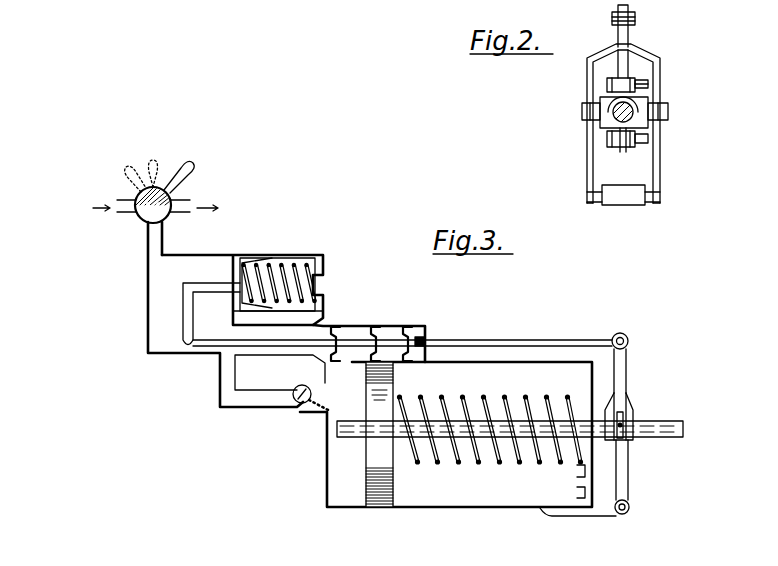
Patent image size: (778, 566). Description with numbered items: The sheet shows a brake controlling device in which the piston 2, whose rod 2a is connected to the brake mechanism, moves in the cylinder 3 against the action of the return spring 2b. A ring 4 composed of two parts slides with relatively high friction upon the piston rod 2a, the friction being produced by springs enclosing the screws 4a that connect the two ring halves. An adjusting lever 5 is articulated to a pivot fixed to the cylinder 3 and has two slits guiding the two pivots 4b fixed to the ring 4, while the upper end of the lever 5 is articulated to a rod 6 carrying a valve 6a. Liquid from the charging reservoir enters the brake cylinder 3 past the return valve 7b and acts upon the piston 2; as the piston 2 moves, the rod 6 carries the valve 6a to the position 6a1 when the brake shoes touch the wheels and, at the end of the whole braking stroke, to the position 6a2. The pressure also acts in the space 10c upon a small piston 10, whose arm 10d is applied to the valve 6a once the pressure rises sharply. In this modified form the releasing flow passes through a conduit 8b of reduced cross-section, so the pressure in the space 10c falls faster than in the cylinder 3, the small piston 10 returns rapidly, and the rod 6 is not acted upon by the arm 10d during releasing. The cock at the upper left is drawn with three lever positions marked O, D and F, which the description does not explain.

In FIG. 3, the piston 2 is at (385, 500).
In FIG. 2, the piston rod 2a is at (620, 134).
In FIG. 3, the piston rod 2a is at (656, 434).
In FIG. 3, the return spring 2b is at (437, 464).
In FIG. 3, the cylinder 3 is at (327, 483).
In FIG. 2, the ring 4 is at (600, 100).
In FIG. 3, the ring 4 is at (633, 411).
In FIG. 2, the screws 4a is at (647, 81).
In FIG. 2, the pivots 4b is at (667, 112).
In FIG. 2, the adjusting lever 5 is at (655, 155).
In FIG. 3, the adjusting lever 5 is at (623, 371).
In FIG. 2, the rod 6 is at (633, 20).
In FIG. 3, the rod 6 is at (205, 348).
In FIG. 3, the valve 6a is at (336, 326).
In FIG. 3, the valve position 6a1 is at (378, 326).
In FIG. 3, the valve position 6a2 is at (420, 327).
In FIG. 3, the return valve 7b is at (297, 402).
In FIG. 3, the conduit 8b is at (262, 358).
In FIG. 3, the small piston 10 is at (245, 261).
In FIG. 3, the space 10c is at (211, 262).
In FIG. 3, the arm 10d is at (184, 348).
In FIG. 3, the open position O is at (153, 160).
In FIG. 3, the throttle position D is at (124, 170).
In FIG. 3, the closed position F is at (190, 164).